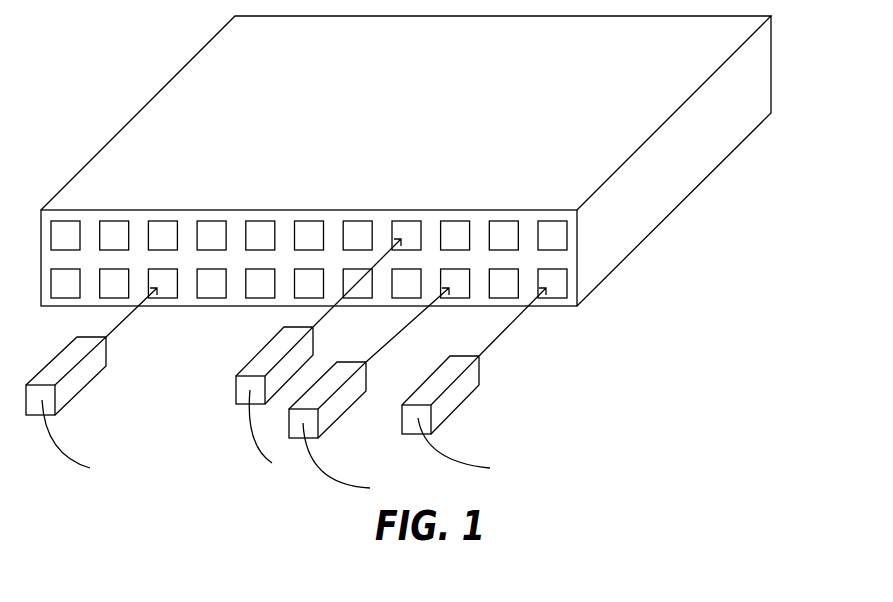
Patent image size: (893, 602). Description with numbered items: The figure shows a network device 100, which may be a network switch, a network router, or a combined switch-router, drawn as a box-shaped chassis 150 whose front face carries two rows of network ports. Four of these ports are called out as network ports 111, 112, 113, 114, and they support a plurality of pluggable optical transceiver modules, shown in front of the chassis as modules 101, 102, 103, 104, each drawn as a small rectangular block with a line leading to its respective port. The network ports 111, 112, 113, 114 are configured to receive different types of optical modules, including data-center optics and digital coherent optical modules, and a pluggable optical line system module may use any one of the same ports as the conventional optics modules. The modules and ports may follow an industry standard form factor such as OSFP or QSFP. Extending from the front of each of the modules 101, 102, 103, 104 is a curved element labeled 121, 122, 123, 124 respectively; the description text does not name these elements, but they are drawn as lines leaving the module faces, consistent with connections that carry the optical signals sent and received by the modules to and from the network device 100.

The network device 100 is at (406, 177).
The chassis 150 is at (652, 233).
The network port 111 is at (157, 298).
The network port 112 is at (402, 221).
The network port 113 is at (468, 298).
The network port 114 is at (552, 298).
The pluggable optical transceiver module 101 is at (87, 383).
The pluggable optical transceiver module 102 is at (236, 400).
The pluggable optical transceiver module 103 is at (362, 392).
The pluggable optical transceiver module 104 is at (408, 437).
The cable 121 is at (63, 457).
The cable 122 is at (243, 446).
The cable 123 is at (342, 485).
The cable 124 is at (457, 462).